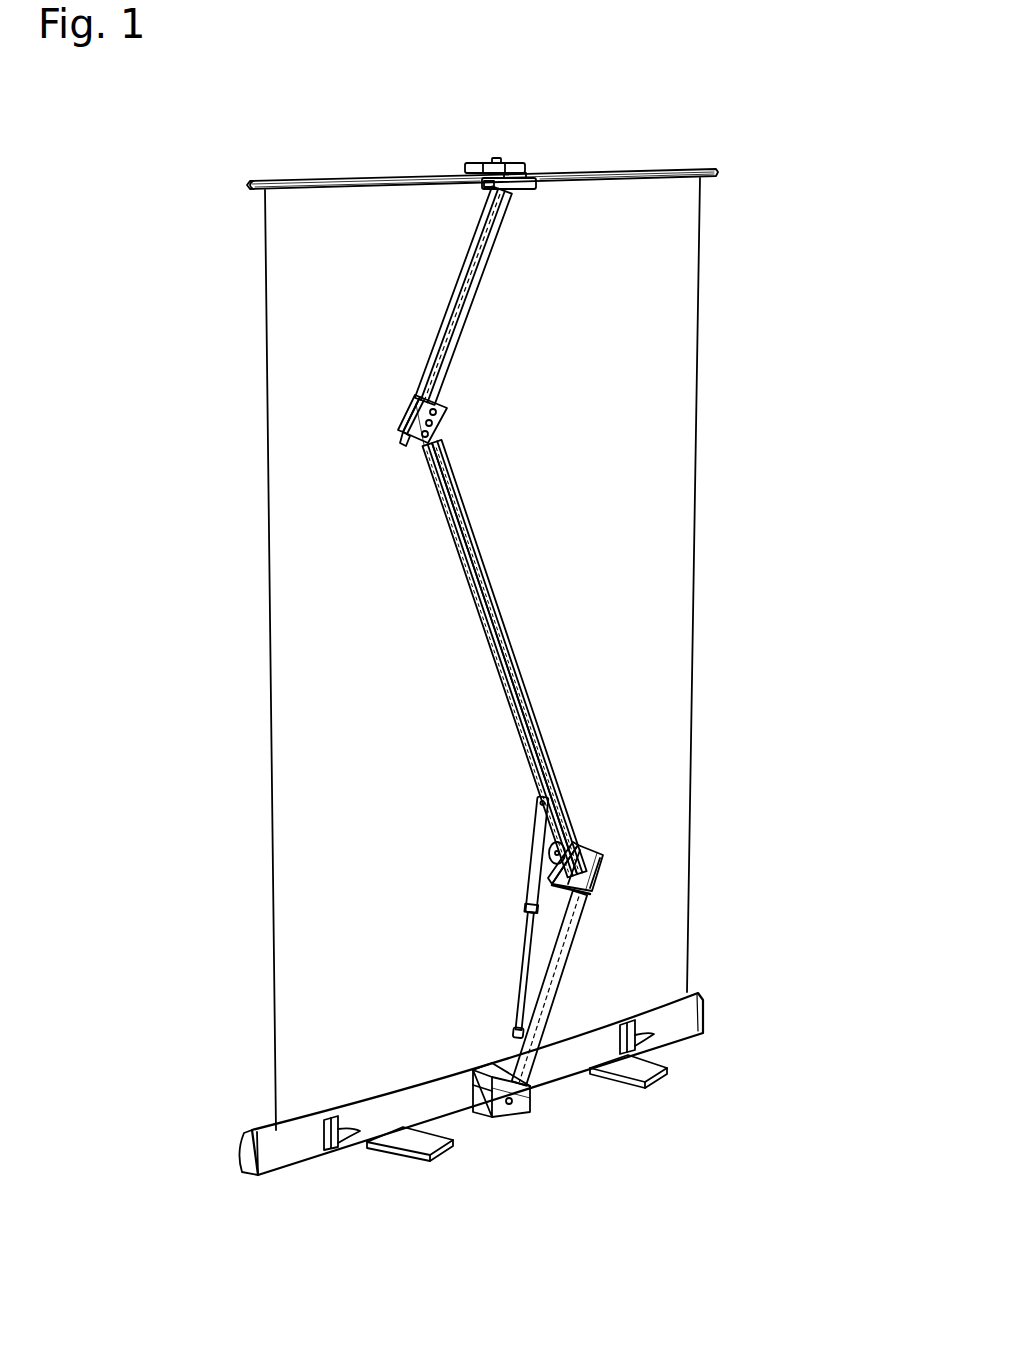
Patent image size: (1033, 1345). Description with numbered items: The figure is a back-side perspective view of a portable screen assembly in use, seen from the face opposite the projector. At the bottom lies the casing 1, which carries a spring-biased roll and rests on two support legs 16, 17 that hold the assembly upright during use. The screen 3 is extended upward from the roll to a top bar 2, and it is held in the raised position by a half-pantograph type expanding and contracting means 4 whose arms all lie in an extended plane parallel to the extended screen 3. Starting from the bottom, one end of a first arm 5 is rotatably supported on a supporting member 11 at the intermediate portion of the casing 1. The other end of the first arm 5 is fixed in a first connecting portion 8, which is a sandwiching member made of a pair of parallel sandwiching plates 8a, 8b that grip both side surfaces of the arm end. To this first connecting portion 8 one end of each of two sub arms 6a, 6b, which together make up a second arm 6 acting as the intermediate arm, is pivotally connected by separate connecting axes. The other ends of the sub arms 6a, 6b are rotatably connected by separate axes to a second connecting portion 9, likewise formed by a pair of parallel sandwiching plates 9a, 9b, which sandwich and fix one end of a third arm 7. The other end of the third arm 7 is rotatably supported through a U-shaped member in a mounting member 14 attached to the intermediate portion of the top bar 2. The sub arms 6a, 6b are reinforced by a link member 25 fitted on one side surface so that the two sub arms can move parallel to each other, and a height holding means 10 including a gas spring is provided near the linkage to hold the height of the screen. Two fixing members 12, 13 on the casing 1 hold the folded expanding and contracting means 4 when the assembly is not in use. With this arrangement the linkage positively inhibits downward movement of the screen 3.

The casing 1 is at (685, 1018).
The top bar 2 is at (673, 168).
The screen 3 is at (657, 452).
The expanding and contracting means 4 is at (410, 651).
The first arm 5 is at (556, 976).
The second arm 6 is at (534, 659).
The sub arm 6a is at (465, 557).
The sub arm 6b is at (508, 595).
The third arm 7 is at (467, 320).
The first connecting portion 8 is at (585, 876).
The sandwiching plate 8a is at (578, 826).
The sandwiching plate 8b is at (590, 850).
The second connecting portion 9 is at (440, 426).
The sandwiching plate 9a is at (418, 410).
The sandwiching plate 9b is at (443, 410).
The height holding means 10 is at (533, 891).
The supporting member 11 is at (498, 1114).
The fixing member 12 is at (332, 1150).
The fixing member 13 is at (652, 1047).
The mounting member 14 is at (518, 166).
The support leg 16 is at (446, 1155).
The support leg 17 is at (655, 1087).
The link member 25 is at (556, 776).